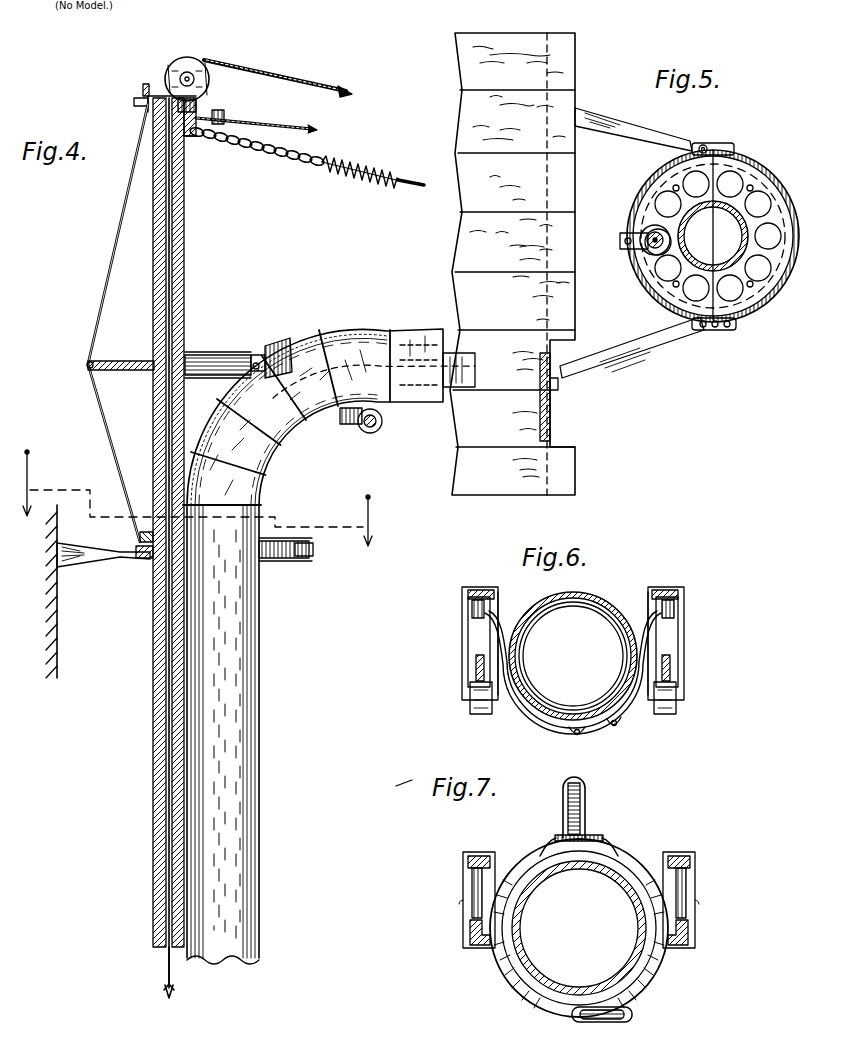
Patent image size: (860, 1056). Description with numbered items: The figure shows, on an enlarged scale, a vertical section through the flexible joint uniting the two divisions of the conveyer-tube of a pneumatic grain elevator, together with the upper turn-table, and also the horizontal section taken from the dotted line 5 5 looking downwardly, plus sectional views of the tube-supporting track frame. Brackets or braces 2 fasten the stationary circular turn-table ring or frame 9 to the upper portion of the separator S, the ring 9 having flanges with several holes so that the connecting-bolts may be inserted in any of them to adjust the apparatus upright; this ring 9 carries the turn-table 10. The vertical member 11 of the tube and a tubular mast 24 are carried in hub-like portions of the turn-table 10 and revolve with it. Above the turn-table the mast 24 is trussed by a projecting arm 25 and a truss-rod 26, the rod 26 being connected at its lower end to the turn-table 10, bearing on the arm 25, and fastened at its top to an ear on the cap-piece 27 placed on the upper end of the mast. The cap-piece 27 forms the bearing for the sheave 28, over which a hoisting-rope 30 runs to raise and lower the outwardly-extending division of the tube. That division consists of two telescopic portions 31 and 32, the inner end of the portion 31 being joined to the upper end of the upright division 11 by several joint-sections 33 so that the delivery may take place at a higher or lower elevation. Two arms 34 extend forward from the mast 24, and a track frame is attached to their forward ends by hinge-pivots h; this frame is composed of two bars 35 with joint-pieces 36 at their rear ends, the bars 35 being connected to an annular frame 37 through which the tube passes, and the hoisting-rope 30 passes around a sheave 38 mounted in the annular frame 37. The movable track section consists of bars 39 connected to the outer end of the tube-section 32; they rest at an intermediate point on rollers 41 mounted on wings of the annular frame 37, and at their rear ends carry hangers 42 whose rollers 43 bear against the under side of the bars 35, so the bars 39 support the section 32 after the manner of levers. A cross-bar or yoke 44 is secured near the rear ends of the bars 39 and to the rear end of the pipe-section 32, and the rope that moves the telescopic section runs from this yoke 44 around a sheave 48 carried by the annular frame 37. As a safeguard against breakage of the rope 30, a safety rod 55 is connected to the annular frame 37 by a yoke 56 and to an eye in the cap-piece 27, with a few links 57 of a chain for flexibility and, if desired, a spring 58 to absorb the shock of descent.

In FIG. 4, the brackets or braces 2 is at (94, 560).
In FIG. 5, the brackets or braces 2 is at (648, 136).
In FIG. 4, the dotted line 5 5 is at (196, 498).
In FIG. 4, the stationary circular turn-table ring or frame 9 is at (312, 558).
In FIG. 5, the stationary circular turn-table ring or frame 9 is at (758, 312).
In FIG. 4, the turn-table 10 is at (284, 540).
In FIG. 5, the turn-table 10 is at (780, 196).
In FIG. 4, the vertical member 11 is at (262, 742).
In FIG. 5, the vertical member 11 is at (680, 228).
In FIG. 4, the tubular mast 24 is at (185, 292).
In FIG. 5, the tubular mast 24 is at (644, 228).
In FIG. 4, the projecting arm 25 is at (112, 360).
In FIG. 4, the truss-rod 26 is at (118, 223).
In FIG. 5, the truss-rod 26 is at (624, 248).
In FIG. 4, the cap-piece 27 is at (200, 105).
In FIG. 4, the sheave 28 is at (166, 68).
In FIG. 4, the hoisting-rope 30 is at (330, 84).
In FIG. 4, the telescopic portion 31 is at (428, 398).
In FIG. 6, the telescopic portion 31 is at (522, 664).
In FIG. 6, the telescopic portion 32 is at (616, 600).
In FIG. 7, the telescopic portion 32 is at (518, 914).
In FIG. 4, the joint-sections 33 is at (358, 330).
In FIG. 4, the arms 34 is at (206, 352).
In FIG. 6, the bars 35 is at (476, 667).
In FIG. 7, the bars 35 is at (466, 942).
In FIG. 4, the joint-pieces 36 is at (288, 342).
In FIG. 7, the annular frame 37 is at (640, 848).
In FIG. 7, the sheave 38 is at (588, 790).
In FIG. 6, the bars 39 is at (470, 590).
In FIG. 7, the bars 39 is at (463, 856).
In FIG. 7, the rollers 41 is at (472, 878).
In FIG. 6, the hangers 42 is at (686, 644).
In FIG. 6, the rollers 43 is at (470, 706).
In FIG. 6, the cross-bar or yoke 44 is at (540, 714).
In FIG. 7, the sheave 48 is at (634, 1014).
In FIG. 4, the rod 55 is at (404, 183).
In FIG. 7, the yoke 56 is at (556, 836).
In FIG. 4, the links of a chain 57 is at (252, 150).
In FIG. 4, the spring 58 is at (350, 172).
In FIG. 4, the hinge-pivots h is at (257, 354).
In FIG. 4, the separator S is at (60, 648).
In FIG. 5, the separator S is at (560, 430).